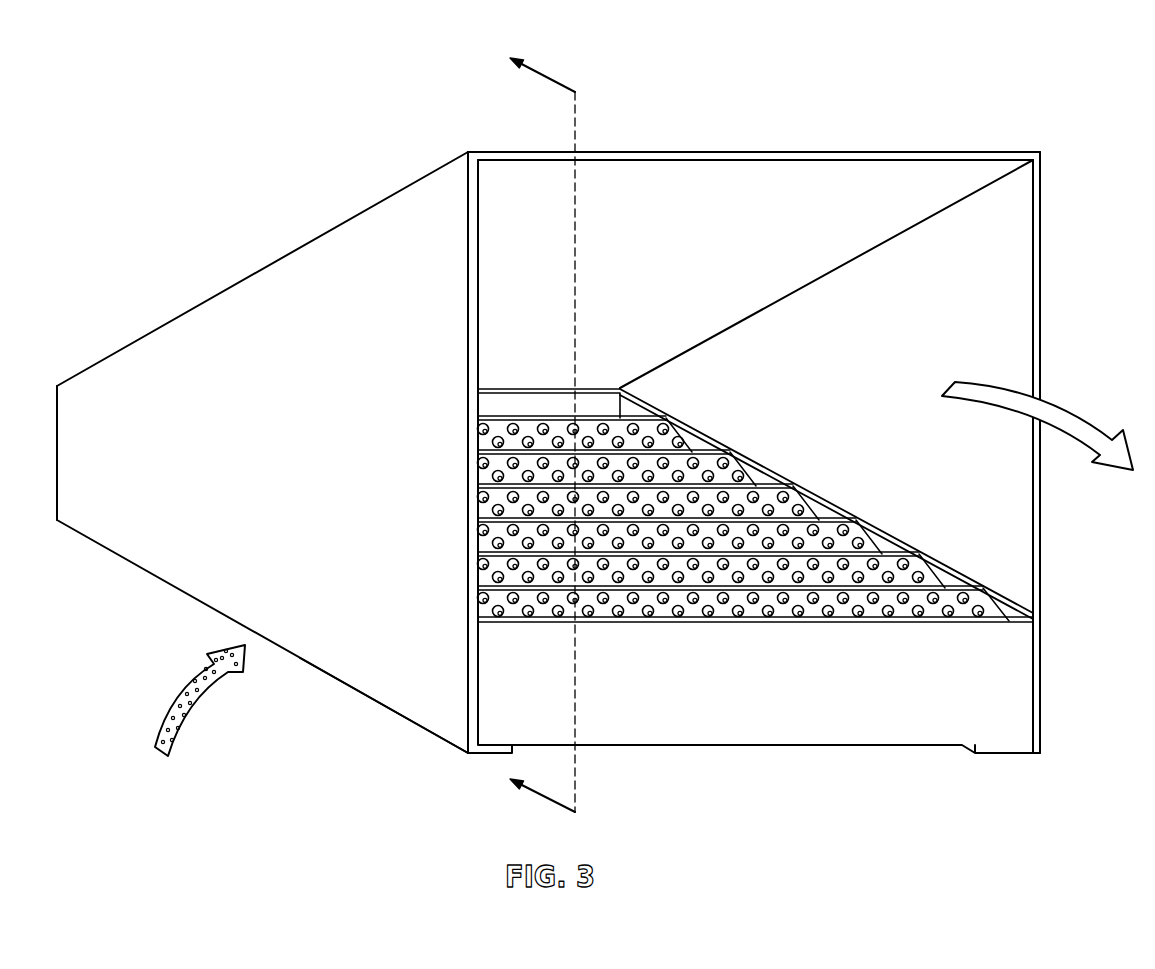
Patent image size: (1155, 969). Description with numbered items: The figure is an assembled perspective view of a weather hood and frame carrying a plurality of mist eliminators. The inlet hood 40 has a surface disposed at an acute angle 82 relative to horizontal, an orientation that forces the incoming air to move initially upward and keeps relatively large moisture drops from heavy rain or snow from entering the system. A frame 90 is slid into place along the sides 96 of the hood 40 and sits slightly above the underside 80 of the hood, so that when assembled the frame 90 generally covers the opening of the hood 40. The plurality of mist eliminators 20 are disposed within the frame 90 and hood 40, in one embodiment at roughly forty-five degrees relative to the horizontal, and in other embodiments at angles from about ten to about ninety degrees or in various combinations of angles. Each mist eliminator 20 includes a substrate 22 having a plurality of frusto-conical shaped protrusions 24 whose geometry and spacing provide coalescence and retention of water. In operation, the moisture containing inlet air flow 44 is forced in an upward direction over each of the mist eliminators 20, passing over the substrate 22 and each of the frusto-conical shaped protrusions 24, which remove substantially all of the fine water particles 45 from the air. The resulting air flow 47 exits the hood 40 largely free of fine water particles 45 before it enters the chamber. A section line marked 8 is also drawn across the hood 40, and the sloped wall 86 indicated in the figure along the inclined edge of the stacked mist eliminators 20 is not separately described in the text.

The section line 8- 8 is at (532, 427).
The mist eliminator 20 is at (602, 408).
The substrate 22 is at (842, 512).
The frusto-conical shaped protrusions 24 is at (798, 487).
The inlet hood 40 is at (200, 275).
The moisture containing inlet air flow 44 is at (211, 702).
The fine water particles 45 is at (245, 666).
The air flow exiting the hood 47 is at (1062, 413).
The underside of the hood 80 is at (380, 702).
The acute angle 82 is at (843, 173).
The sloped wall 86 is at (729, 449).
The frame 90 is at (781, 740).
The sides of the hood 96 is at (124, 538).